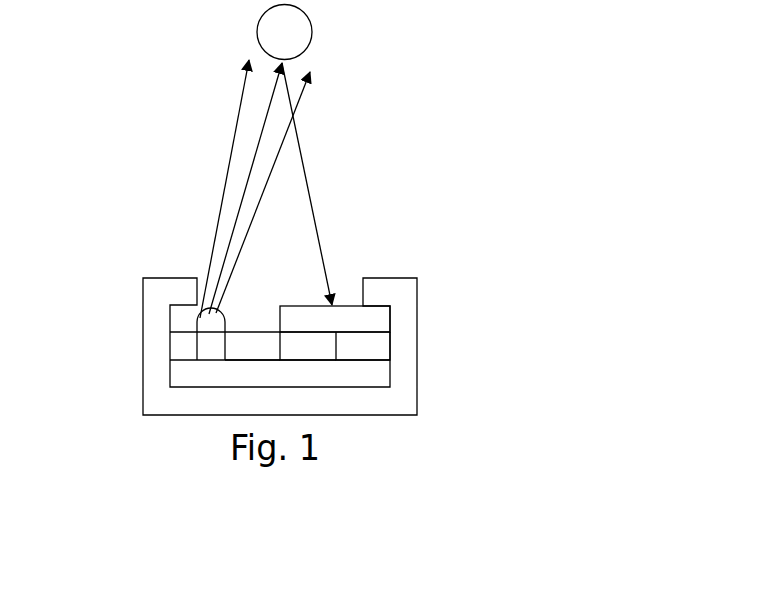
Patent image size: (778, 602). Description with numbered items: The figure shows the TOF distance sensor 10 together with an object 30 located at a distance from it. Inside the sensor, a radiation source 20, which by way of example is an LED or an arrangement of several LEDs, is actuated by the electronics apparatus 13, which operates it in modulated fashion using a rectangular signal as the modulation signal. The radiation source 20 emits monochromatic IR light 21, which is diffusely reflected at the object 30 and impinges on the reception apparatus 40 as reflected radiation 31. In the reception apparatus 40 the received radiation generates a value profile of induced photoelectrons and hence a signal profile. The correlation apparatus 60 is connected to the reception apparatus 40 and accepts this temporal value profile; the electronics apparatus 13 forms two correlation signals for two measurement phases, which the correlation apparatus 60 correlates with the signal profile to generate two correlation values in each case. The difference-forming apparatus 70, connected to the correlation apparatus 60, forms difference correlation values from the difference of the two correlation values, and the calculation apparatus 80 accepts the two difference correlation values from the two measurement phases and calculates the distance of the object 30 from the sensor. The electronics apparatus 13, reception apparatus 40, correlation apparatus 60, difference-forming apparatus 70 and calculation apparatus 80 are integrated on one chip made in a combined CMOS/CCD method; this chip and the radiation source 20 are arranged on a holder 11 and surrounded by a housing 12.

The TOF distance sensor 10 is at (178, 162).
The holder 11 is at (203, 375).
The housing 12 is at (203, 398).
The electronics apparatus 13 is at (203, 348).
The radiation source 20 is at (211, 322).
The monochromatic IR light 21 is at (211, 245).
The object 30 is at (297, 33).
The reflected radiation 31 is at (315, 185).
The reception apparatus 40 is at (341, 322).
The correlation apparatus 60 is at (363, 344).
The difference-forming apparatus 70 is at (312, 350).
The calculation apparatus 80 is at (256, 349).